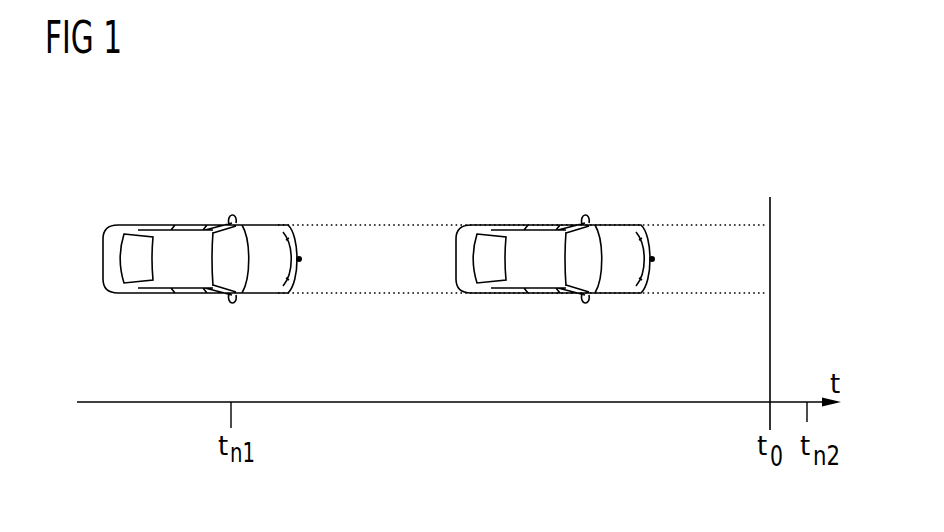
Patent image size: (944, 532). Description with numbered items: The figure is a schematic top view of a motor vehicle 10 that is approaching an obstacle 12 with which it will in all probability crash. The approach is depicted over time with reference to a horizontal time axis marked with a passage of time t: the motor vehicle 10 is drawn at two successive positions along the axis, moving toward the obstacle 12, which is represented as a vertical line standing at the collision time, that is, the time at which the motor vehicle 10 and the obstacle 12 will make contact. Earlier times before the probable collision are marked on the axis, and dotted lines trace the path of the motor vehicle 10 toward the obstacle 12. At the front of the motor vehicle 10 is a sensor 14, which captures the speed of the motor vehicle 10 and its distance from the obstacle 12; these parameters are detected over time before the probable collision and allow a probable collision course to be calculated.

The motor vehicle 10 is at (548, 150).
The obstacle 12 is at (770, 238).
The sensor 14 is at (655, 258).